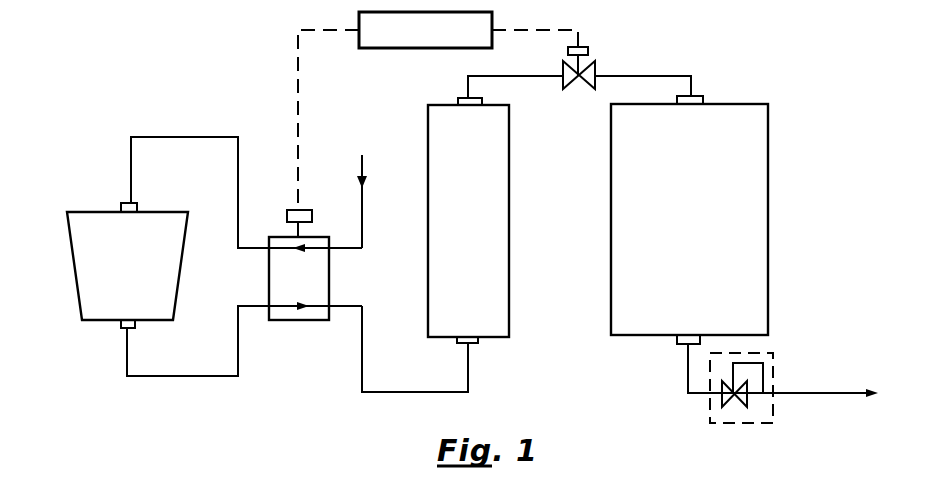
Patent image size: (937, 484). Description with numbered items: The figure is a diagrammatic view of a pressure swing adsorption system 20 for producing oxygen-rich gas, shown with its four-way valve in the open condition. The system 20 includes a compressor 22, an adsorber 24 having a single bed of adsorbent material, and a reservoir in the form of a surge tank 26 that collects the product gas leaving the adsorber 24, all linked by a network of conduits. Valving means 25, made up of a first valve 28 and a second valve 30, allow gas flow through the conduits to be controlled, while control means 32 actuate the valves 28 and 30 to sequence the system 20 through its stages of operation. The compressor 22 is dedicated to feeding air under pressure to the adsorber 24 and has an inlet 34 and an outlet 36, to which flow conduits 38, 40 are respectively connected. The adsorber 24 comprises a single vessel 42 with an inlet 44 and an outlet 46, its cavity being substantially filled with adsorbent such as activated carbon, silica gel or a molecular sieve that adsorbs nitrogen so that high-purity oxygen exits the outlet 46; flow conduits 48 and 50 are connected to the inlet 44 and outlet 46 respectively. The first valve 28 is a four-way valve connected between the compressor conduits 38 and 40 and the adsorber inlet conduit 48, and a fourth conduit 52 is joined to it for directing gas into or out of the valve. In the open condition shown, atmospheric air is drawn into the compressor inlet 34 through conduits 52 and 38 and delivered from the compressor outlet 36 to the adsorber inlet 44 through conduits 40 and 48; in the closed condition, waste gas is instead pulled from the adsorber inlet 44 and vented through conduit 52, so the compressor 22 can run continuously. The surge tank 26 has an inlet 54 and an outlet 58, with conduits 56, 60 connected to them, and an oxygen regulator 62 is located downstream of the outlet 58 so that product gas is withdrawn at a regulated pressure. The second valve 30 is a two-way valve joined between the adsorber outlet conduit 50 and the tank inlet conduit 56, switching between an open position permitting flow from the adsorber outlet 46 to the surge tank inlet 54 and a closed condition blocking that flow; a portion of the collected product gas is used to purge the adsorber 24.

The system 20 is at (766, 80).
The compressor 22 is at (70, 243).
The adsorber 24 is at (492, 224).
The valving means 25 is at (297, 323).
The surge tank 26 is at (752, 225).
The first valve 28 is at (315, 289).
The second valve 30 is at (595, 63).
The control means 32 is at (382, 50).
The compressor inlet 34 is at (136, 206).
The compressor outlet 36 is at (118, 327).
The flow conduit 38 is at (178, 135).
The flow conduit 40 is at (162, 373).
The vessel 42 is at (495, 315).
The adsorber inlet 44 is at (455, 340).
The adsorber outlet 46 is at (460, 100).
The adsorber inlet conduit 48 is at (403, 393).
The adsorber outlet conduit 50 is at (497, 75).
The fourth conduit 52 is at (362, 200).
The surge tank inlet 54 is at (702, 98).
The tank inlet conduit 56 is at (652, 73).
The surge tank outlet 58 is at (675, 340).
The tank outlet conduit 60 is at (695, 397).
The oxygen regulator 62 is at (745, 425).